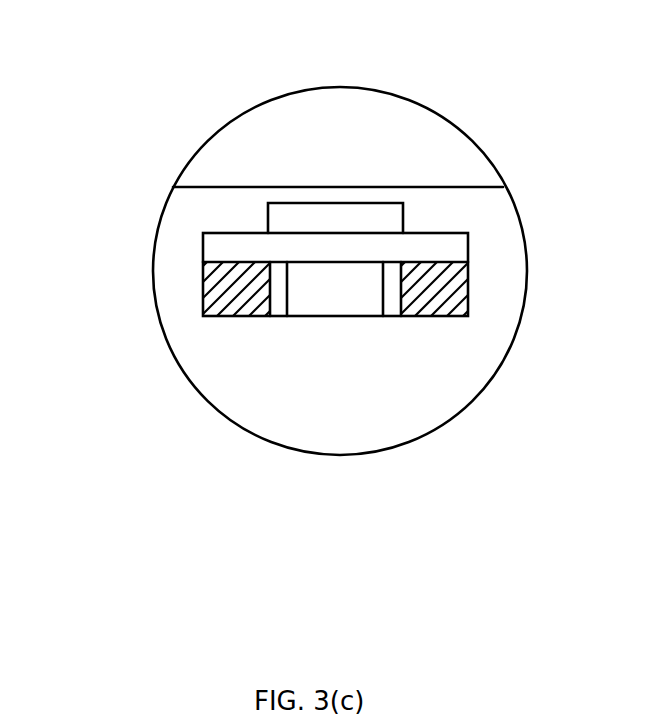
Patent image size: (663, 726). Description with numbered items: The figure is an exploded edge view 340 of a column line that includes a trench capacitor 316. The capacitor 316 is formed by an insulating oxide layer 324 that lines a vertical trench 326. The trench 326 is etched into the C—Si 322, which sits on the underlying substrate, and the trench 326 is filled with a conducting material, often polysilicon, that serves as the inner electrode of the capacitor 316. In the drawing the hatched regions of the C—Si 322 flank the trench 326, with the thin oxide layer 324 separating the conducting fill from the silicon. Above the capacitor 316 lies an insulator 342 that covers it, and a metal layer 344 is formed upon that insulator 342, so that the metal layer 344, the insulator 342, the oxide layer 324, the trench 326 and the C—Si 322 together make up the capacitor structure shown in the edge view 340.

The exploded edge view 340 is at (160, 215).
The insulator 342 is at (424, 193).
The metal layer 344 is at (353, 217).
The trench capacitor 316 is at (337, 320).
The C—Si 322 is at (435, 316).
The insulating oxide layer 324 is at (393, 303).
The vertical trench 326 is at (352, 282).